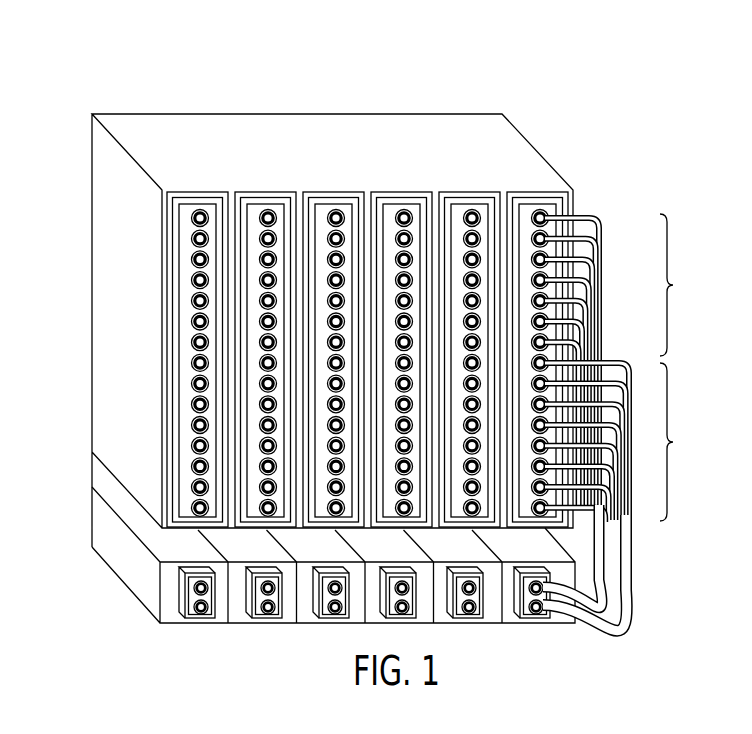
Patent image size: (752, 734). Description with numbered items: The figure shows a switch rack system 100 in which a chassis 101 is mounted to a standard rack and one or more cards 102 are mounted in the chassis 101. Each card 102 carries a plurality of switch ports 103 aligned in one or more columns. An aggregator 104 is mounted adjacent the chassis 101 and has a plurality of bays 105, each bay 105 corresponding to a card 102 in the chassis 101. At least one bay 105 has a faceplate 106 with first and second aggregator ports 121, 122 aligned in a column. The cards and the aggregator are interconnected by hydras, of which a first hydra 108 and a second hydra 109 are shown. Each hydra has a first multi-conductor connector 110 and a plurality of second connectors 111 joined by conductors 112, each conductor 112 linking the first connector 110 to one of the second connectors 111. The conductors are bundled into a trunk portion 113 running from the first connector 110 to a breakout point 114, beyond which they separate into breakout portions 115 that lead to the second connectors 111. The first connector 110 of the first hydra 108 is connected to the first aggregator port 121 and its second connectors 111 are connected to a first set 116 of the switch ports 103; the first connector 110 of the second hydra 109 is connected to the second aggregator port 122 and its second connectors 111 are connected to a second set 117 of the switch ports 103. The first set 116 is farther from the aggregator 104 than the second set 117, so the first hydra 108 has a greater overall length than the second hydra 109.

The switch rack system 100 is at (398, 62).
The chassis 101 is at (103, 362).
The card 102 is at (217, 213).
The switch port 103 is at (197, 283).
The aggregator 104 is at (102, 537).
The bay 105 is at (170, 550).
The faceplate 106 is at (525, 620).
The first hydra 108 is at (605, 298).
The second hydra 109 is at (630, 598).
The first multi-conductor connector 110 is at (532, 614).
The second connector 111 is at (541, 205).
The conductor 112 is at (612, 618).
The trunk portion 113 is at (628, 568).
The breakout point 114 is at (599, 348).
The breakout portion 115 is at (602, 222).
The first set of switch ports 116 is at (681, 285).
The second set of switch ports 117 is at (681, 442).
The first aggregator port 121 is at (532, 582).
The second aggregator port 122 is at (532, 602).